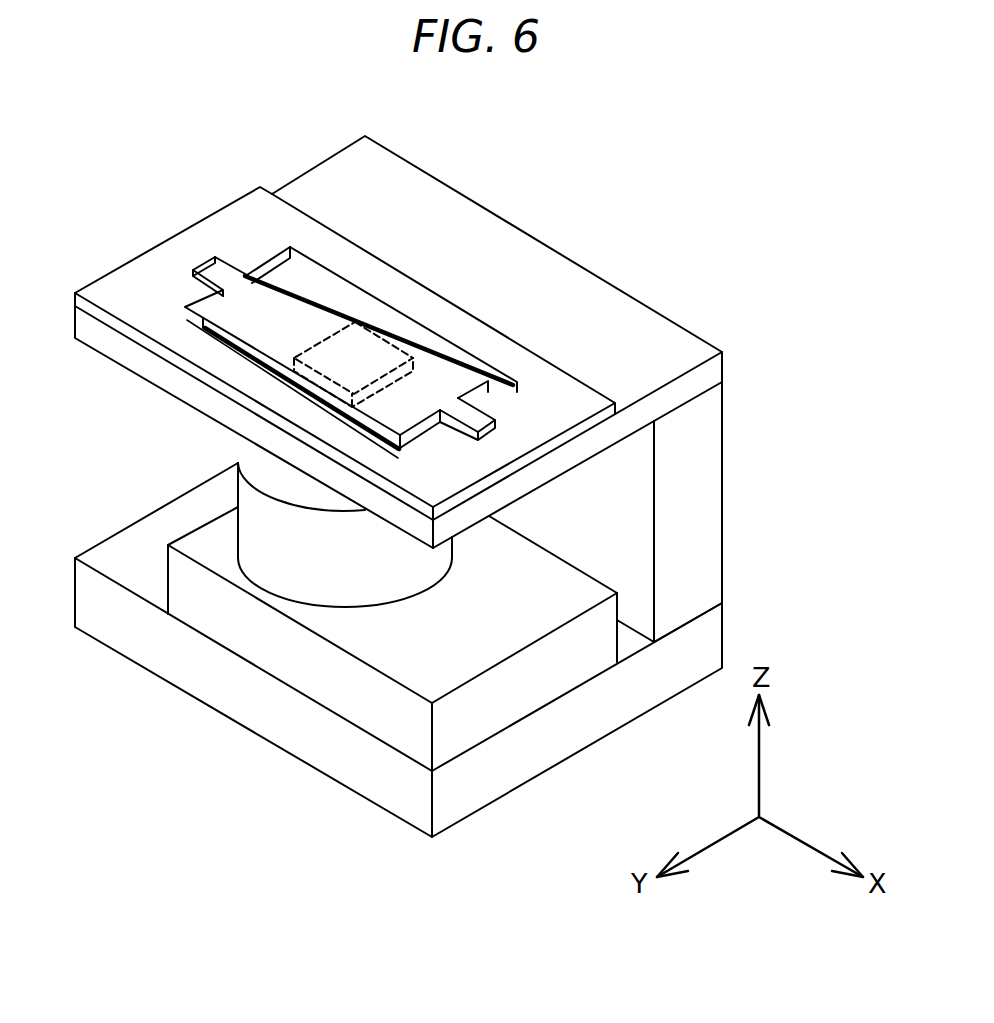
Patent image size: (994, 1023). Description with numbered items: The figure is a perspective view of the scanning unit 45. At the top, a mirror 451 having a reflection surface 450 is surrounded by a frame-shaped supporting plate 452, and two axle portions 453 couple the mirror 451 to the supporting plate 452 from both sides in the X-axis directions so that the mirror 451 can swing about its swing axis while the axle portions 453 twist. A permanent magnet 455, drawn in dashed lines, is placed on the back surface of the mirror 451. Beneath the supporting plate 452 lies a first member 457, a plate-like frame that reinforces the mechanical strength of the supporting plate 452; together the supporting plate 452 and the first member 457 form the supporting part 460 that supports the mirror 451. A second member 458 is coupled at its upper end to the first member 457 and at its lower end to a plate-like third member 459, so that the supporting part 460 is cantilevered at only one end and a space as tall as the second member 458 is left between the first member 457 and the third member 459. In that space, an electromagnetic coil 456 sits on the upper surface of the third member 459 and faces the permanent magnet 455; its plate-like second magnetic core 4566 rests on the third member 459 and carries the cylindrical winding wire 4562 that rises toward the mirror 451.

The scanning unit 45 is at (172, 175).
The reflection surface 450 is at (255, 323).
The mirror 451 is at (262, 358).
The supporting plate 452 is at (140, 318).
The axle portions 453 is at (213, 272).
The permanent magnet 455 is at (355, 352).
The electromagnetic coil 456 is at (218, 542).
The first member 457 is at (706, 366).
The second member 458 is at (707, 460).
The third member 459 is at (712, 632).
The supporting part 460 is at (840, 321).
The winding wire 4562 is at (272, 558).
The second magnetic core 4566 is at (300, 665).